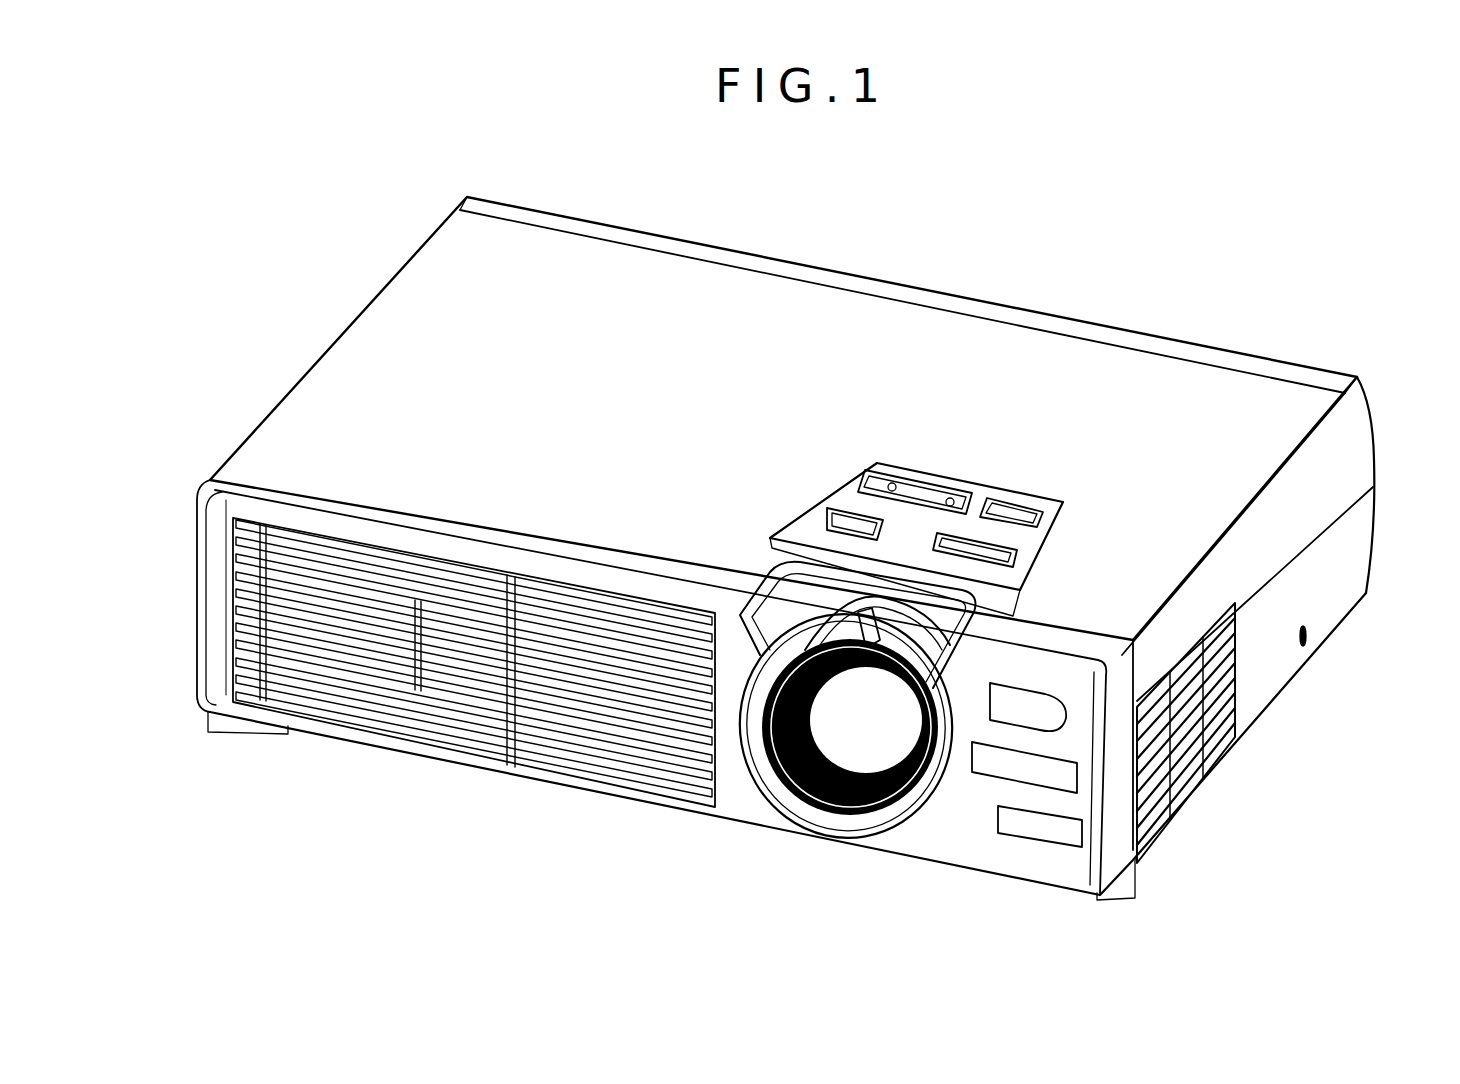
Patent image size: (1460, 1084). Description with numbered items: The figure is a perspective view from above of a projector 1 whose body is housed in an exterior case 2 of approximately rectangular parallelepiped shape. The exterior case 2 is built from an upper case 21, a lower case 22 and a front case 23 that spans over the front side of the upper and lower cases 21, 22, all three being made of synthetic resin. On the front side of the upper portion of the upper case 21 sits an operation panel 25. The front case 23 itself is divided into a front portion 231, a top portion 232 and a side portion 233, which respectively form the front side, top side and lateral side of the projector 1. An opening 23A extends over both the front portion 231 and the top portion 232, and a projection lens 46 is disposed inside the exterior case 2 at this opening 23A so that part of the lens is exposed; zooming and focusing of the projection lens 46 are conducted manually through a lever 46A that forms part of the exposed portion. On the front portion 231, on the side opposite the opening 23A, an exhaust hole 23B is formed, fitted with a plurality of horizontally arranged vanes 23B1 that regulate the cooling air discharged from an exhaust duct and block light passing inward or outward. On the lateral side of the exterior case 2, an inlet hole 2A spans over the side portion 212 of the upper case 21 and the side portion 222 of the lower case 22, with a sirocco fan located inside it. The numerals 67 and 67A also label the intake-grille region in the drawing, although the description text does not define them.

The projector 1 is at (1206, 216).
The exterior case 2 is at (1210, 385).
The upper case 21 is at (925, 315).
The lower case 22 is at (1265, 683).
The front case 23 is at (743, 800).
The side portion of the upper case 212 is at (1355, 440).
The side portion of the lower case 222 is at (1355, 553).
The front portion 231 is at (950, 825).
The top portion 232 is at (262, 478).
The side portion 233 is at (1118, 805).
The inlet hole 2A is at (1233, 745).
The opening 23A is at (778, 610).
The exhaust hole 23B is at (323, 620).
The vanes 23B1 is at (412, 645).
The operation panel 25 is at (1045, 540).
The projection lens 46 is at (852, 745).
The lever 46A is at (985, 612).
The intake opening / filter 67 is at (232, 586).
The intake opening frame 67A is at (228, 560).